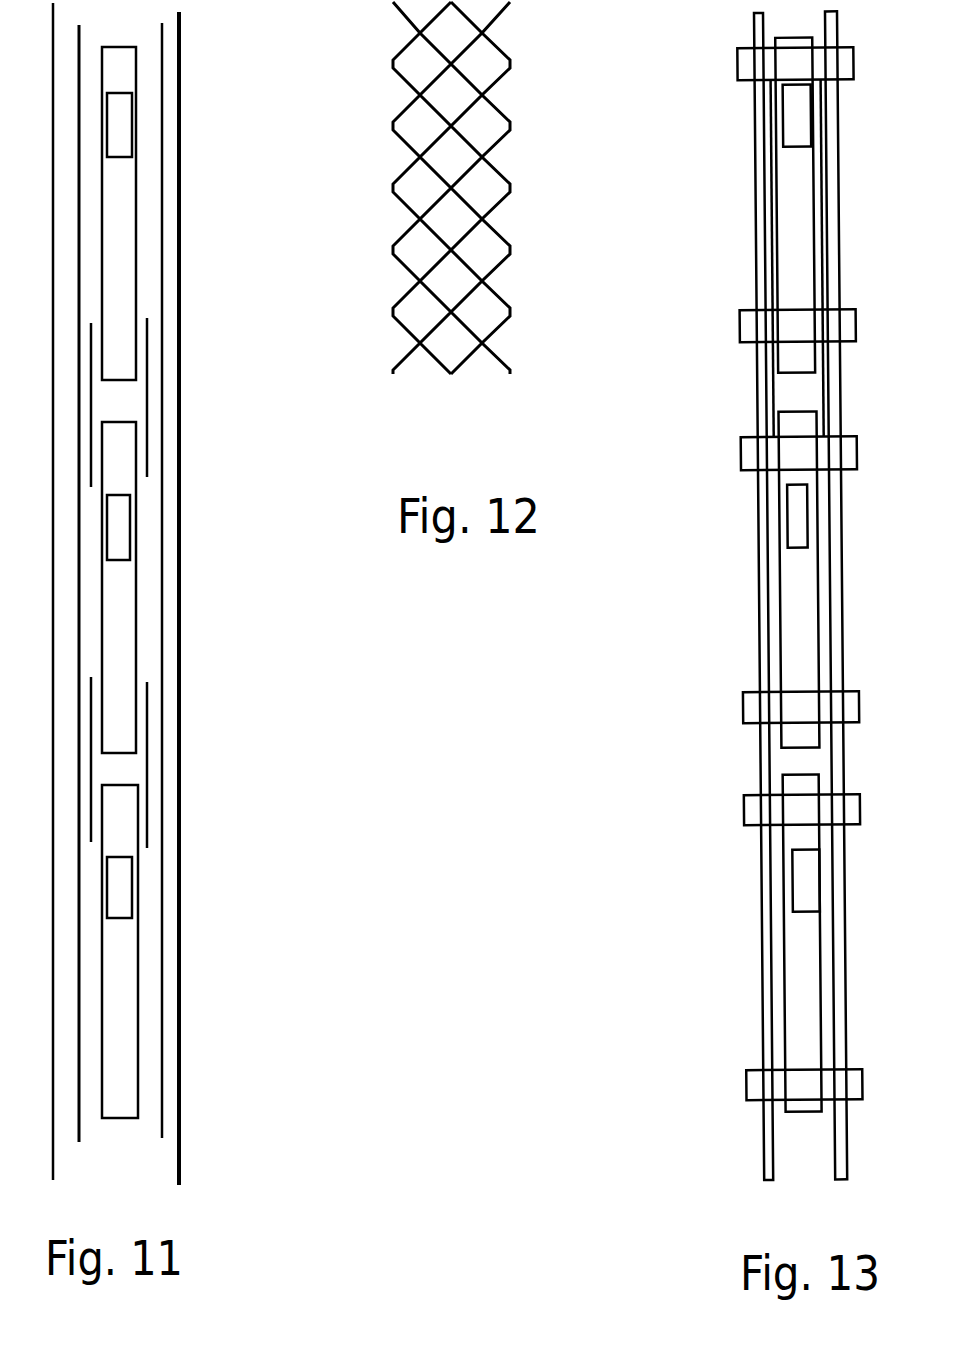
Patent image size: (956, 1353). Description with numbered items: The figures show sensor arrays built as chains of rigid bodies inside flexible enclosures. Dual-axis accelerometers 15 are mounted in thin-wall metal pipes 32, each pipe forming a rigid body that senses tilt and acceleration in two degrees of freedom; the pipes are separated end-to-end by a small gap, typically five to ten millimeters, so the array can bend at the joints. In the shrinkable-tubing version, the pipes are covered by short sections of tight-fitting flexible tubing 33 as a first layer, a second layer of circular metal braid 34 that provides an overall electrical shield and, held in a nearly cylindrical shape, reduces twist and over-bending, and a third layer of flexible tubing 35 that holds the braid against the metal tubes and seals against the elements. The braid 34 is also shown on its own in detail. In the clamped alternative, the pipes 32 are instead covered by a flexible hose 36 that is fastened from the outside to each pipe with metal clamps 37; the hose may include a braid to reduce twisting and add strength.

In FIG. 11, the dual-axis accelerometer 15 is at (118, 127).
In FIG. 13, the dual-axis accelerometer 15 is at (800, 875).
In FIG. 11, the thin-wall metal pipe 32 is at (147, 70).
In FIG. 13, the thin-wall metal pipe 32 is at (798, 1007).
In FIG. 11, the tight-fitting flexible tubing 33 is at (224, 579).
In FIG. 11, the circular metal braid 34 is at (168, 502).
In FIG. 12, the circular metal braid 34 is at (527, 262).
In FIG. 11, the flexible tubing 35 is at (182, 585).
In FIG. 13, the flexible hose 36 is at (757, 767).
In FIG. 13, the metal clamp 37 is at (745, 812).